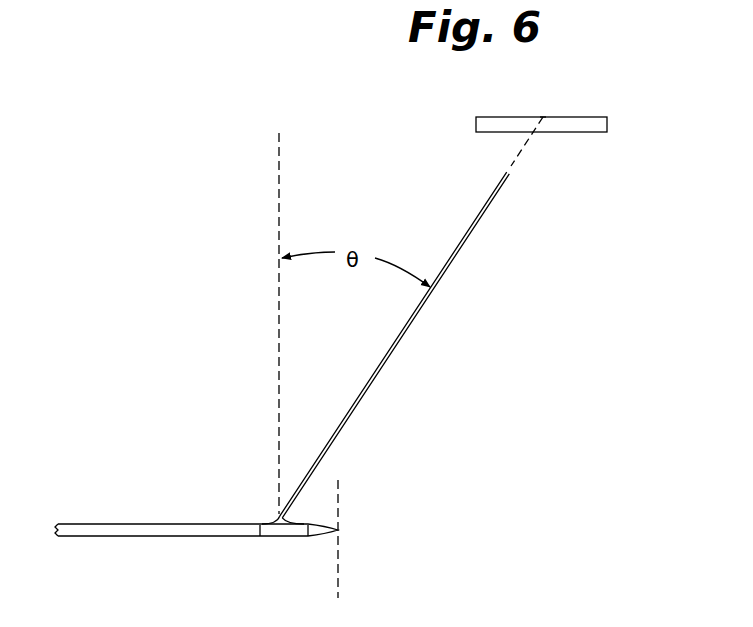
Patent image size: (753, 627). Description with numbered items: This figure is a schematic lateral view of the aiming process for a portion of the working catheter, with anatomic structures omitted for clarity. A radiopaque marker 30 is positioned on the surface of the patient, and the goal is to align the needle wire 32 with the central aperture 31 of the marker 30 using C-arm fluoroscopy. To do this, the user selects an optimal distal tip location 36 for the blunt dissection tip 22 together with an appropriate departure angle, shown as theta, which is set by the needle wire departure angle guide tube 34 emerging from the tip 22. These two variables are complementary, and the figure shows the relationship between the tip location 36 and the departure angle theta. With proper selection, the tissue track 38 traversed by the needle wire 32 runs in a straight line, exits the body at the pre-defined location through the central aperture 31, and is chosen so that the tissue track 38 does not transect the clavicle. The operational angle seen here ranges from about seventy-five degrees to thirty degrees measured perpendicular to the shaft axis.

The blunt dissection tip 22 is at (340, 530).
The radiopaque marker 30 is at (590, 122).
The central aperture 31 is at (542, 114).
The needle wire 32 is at (413, 323).
The needle wire departure angle guide tube 34 is at (277, 515).
The distal tip location 36 is at (340, 577).
The tissue track 38 is at (504, 181).